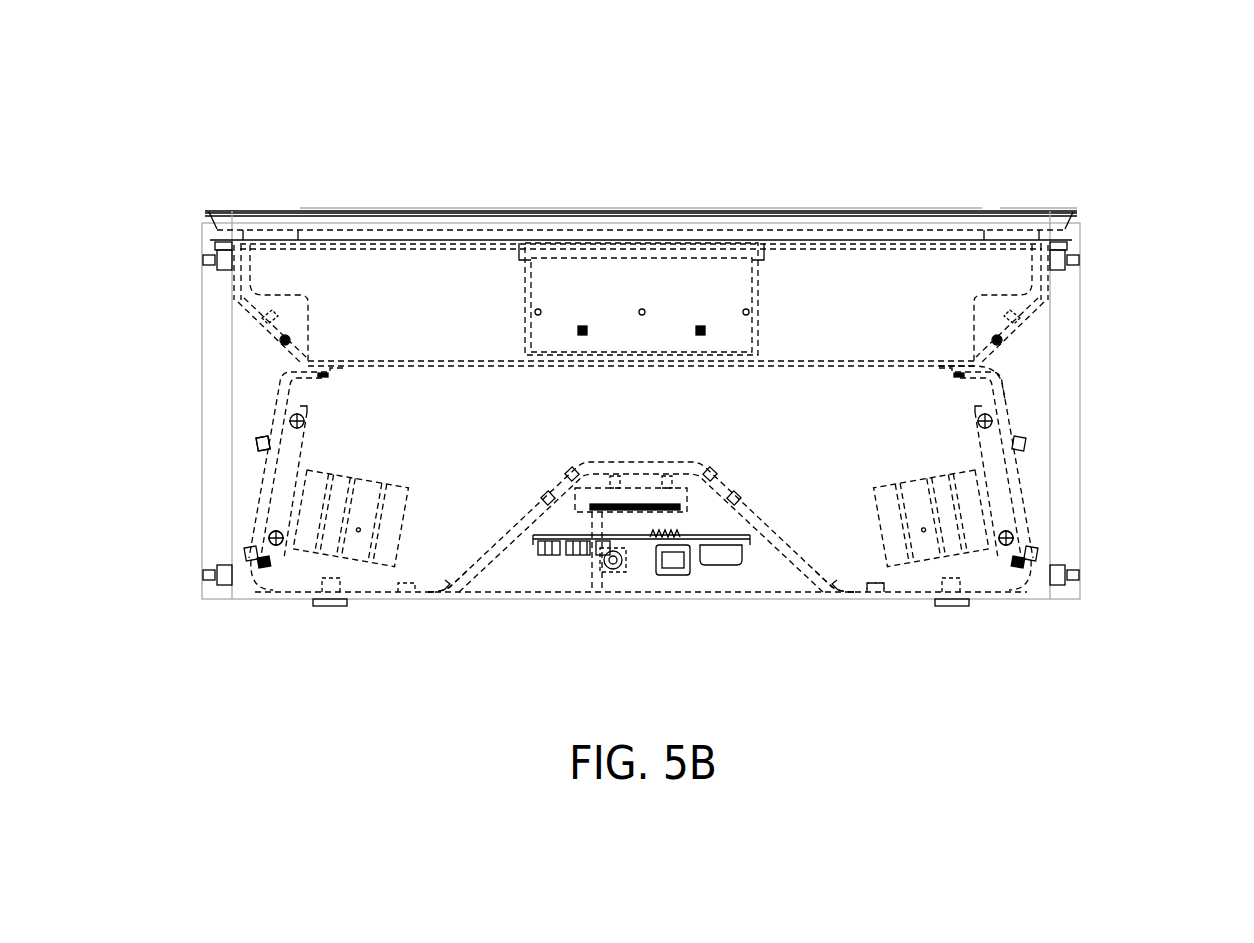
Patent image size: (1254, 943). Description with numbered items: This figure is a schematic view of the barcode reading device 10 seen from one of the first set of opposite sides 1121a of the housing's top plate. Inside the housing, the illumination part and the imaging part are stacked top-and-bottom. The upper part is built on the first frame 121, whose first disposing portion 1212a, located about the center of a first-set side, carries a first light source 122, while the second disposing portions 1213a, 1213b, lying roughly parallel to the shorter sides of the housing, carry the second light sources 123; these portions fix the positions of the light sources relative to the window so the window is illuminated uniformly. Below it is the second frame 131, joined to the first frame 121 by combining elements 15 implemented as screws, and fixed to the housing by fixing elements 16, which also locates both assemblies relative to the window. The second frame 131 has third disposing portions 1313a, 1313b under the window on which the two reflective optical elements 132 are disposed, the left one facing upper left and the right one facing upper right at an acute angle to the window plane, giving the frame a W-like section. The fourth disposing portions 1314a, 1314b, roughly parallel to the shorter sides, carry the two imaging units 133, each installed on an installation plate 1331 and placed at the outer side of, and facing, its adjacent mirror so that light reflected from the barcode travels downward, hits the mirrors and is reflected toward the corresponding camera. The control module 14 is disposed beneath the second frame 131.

The barcode reading device 10 is at (1248, 96).
The first frame 121 is at (1053, 272).
The first set of opposite sides 1121a is at (1035, 212).
The first light source 122 is at (700, 326).
The first disposing portion 1212a is at (692, 283).
The second light source 123 is at (993, 338).
The second disposing portion 1213a is at (258, 318).
The second disposing portion 1213b is at (1033, 318).
The second frame 131 is at (1006, 384).
The fourth disposing portion 1314a is at (263, 507).
The fourth disposing portion 1314b is at (1017, 488).
The combining element 15 is at (262, 447).
The installation plate 1331 is at (1005, 517).
The imaging unit 133 is at (983, 552).
The third disposing portion 1313a is at (463, 567).
The third disposing portion 1313b is at (817, 575).
The reflective optical element 132 is at (813, 553).
The fixing element 16 is at (870, 580).
The control module 14 is at (645, 578).